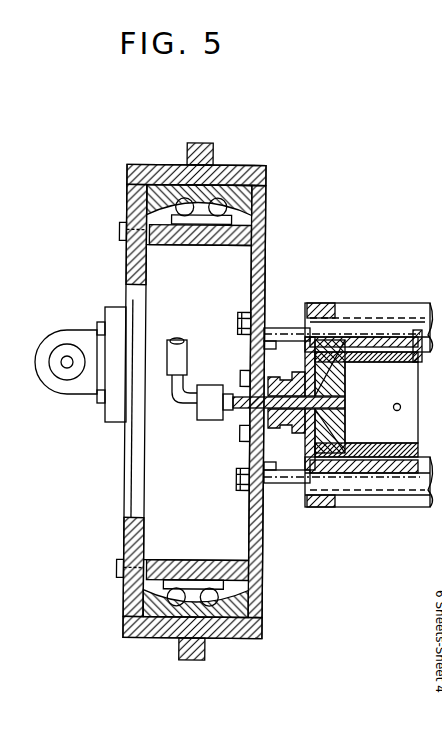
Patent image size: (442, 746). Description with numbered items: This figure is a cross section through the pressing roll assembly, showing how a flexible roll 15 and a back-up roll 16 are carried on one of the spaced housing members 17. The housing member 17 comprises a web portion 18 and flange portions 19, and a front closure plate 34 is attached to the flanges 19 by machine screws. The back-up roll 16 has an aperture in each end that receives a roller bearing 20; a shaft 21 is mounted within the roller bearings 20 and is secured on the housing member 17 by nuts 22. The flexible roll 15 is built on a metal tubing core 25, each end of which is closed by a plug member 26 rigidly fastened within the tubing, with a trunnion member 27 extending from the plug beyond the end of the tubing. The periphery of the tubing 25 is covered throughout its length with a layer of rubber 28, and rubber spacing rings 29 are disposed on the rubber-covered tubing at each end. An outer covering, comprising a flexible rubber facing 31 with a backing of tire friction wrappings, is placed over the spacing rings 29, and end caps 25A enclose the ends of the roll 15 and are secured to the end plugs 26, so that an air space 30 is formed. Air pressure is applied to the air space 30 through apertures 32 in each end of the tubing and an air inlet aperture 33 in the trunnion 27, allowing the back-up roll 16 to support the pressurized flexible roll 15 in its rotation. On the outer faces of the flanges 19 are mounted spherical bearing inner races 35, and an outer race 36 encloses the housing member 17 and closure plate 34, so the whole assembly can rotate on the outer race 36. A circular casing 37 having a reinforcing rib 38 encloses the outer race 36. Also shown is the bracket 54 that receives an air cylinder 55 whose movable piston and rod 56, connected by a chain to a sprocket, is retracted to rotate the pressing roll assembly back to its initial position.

The flexible roll 15 is at (413, 392).
The back-up roll 16 is at (400, 303).
The housing member 17 is at (266, 252).
The web portion 18 is at (257, 266).
The flange portion 19 is at (168, 246).
The roller bearing 20 is at (326, 303).
The shaft 21 is at (283, 341).
The nut 22 is at (237, 322).
The metal tubing core 25 is at (386, 460).
The end cap 25A is at (302, 328).
The plug member 26 is at (302, 392).
The trunnion member 27 is at (294, 430).
The layer of rubber 28 is at (362, 363).
The rubber spacing ring 29 is at (303, 461).
The air space 30 is at (367, 443).
The flexible rubber facing 31 is at (420, 330).
The aperture 32 is at (396, 403).
The air inlet aperture 33 is at (340, 402).
The front closure plate 34 is at (125, 548).
The spherical bearing inner race 35 is at (204, 224).
The outer race 36 is at (128, 201).
The circular casing 37 is at (127, 177).
The reinforcing rib 38 is at (208, 146).
The bracket 54 is at (112, 306).
The air cylinder 55 is at (52, 342).
The piston and rod 56 is at (67, 355).